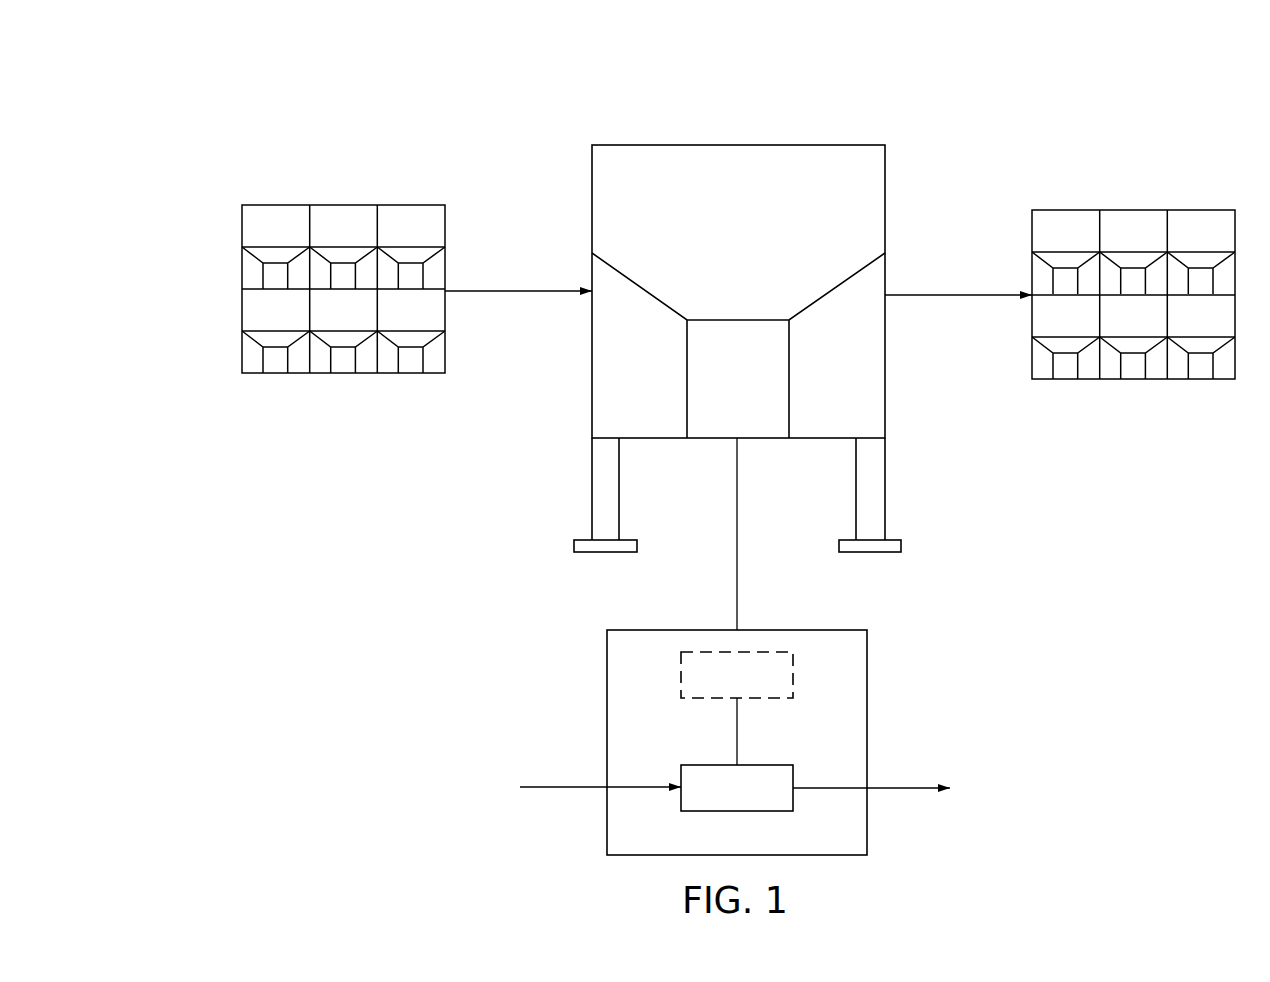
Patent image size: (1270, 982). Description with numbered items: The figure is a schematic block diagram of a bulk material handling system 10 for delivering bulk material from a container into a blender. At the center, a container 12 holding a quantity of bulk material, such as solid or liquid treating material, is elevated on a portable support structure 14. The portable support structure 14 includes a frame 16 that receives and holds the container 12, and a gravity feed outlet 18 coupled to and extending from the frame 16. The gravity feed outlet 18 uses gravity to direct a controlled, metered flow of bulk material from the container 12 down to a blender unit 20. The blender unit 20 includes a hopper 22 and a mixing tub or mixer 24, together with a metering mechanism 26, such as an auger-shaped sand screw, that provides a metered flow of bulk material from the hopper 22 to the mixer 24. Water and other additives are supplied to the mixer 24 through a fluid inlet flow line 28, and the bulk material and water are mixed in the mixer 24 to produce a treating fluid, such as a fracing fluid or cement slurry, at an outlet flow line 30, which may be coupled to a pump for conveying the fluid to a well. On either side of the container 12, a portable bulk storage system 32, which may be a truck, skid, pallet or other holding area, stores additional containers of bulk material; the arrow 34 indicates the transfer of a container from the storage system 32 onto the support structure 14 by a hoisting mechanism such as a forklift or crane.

The bulk material handling system 10 is at (197, 113).
The container 12 is at (885, 203).
The portable support structure 14 is at (568, 493).
The frame 16 is at (885, 489).
The gravity feed outlet 18 is at (737, 535).
The blender unit 20 is at (867, 742).
The hopper 22 is at (681, 660).
The mixer 24 is at (681, 800).
The metering mechanism 26 is at (737, 733).
The fluid inlet flow line 28 is at (566, 789).
The outlet flow line 30 is at (905, 790).
The portable bulk storage system 32 is at (275, 203).
The arrow 34 is at (513, 291).